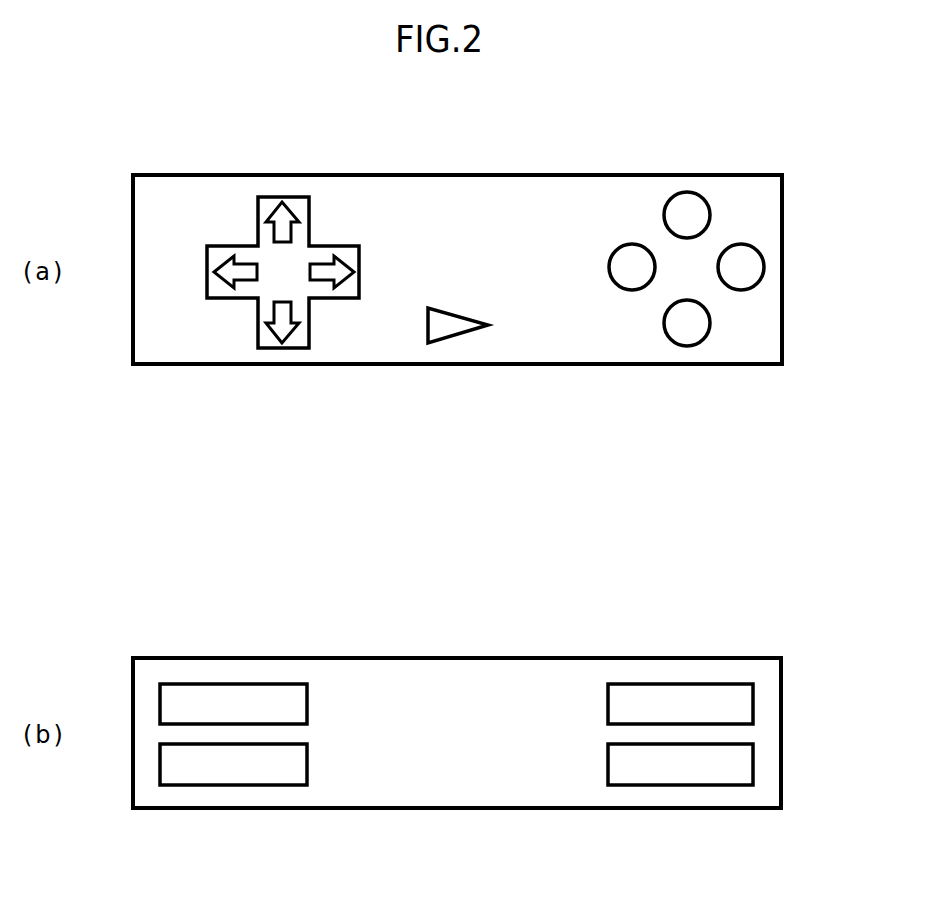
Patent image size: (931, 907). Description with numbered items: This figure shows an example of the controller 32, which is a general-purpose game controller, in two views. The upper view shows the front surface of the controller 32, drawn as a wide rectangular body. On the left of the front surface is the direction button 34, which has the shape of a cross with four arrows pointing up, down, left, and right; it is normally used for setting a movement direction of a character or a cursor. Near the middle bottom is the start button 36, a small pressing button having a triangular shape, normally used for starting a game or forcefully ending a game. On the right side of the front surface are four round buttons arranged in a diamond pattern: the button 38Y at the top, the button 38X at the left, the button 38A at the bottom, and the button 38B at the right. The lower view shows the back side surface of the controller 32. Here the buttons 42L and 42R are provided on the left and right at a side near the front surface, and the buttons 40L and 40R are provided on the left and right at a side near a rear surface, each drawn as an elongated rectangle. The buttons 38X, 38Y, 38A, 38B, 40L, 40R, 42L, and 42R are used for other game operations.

The controller 32 is at (190, 173).
The direction button 34 is at (310, 219).
The start button 36 is at (458, 333).
The button 38Y is at (664, 215).
The button 38X is at (609, 267).
The button 38A is at (664, 323).
The button 38B is at (764, 266).
The button 40L is at (232, 683).
The button 40R is at (680, 683).
The button 42L is at (235, 785).
The button 42R is at (683, 785).